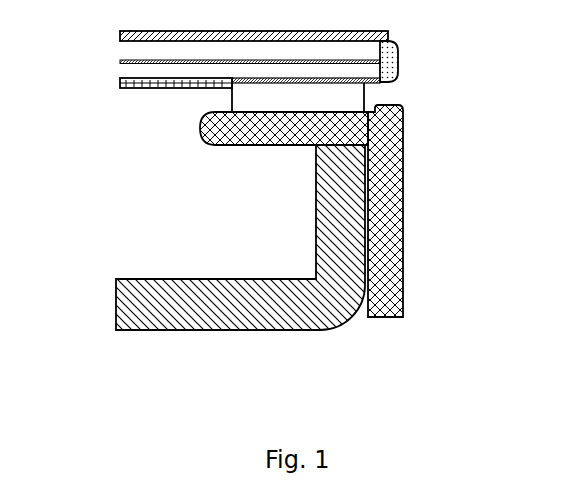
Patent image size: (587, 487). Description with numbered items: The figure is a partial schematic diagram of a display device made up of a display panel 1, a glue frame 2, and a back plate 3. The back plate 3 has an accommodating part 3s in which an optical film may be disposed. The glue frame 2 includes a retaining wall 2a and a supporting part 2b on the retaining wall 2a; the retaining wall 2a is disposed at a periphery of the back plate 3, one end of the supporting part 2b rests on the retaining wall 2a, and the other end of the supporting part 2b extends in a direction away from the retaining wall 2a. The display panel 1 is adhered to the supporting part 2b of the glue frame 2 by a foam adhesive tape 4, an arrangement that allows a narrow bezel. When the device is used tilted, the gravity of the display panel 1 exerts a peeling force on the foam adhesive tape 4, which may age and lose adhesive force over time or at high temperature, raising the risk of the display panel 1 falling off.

The display panel 1 is at (116, 32).
The glue frame 2 is at (361, 211).
The retaining wall 2a is at (467, 138).
The supporting part 2b is at (297, 131).
The back plate 3 is at (253, 318).
The accommodating part 3s is at (207, 250).
The foam adhesive tape 4 is at (358, 97).